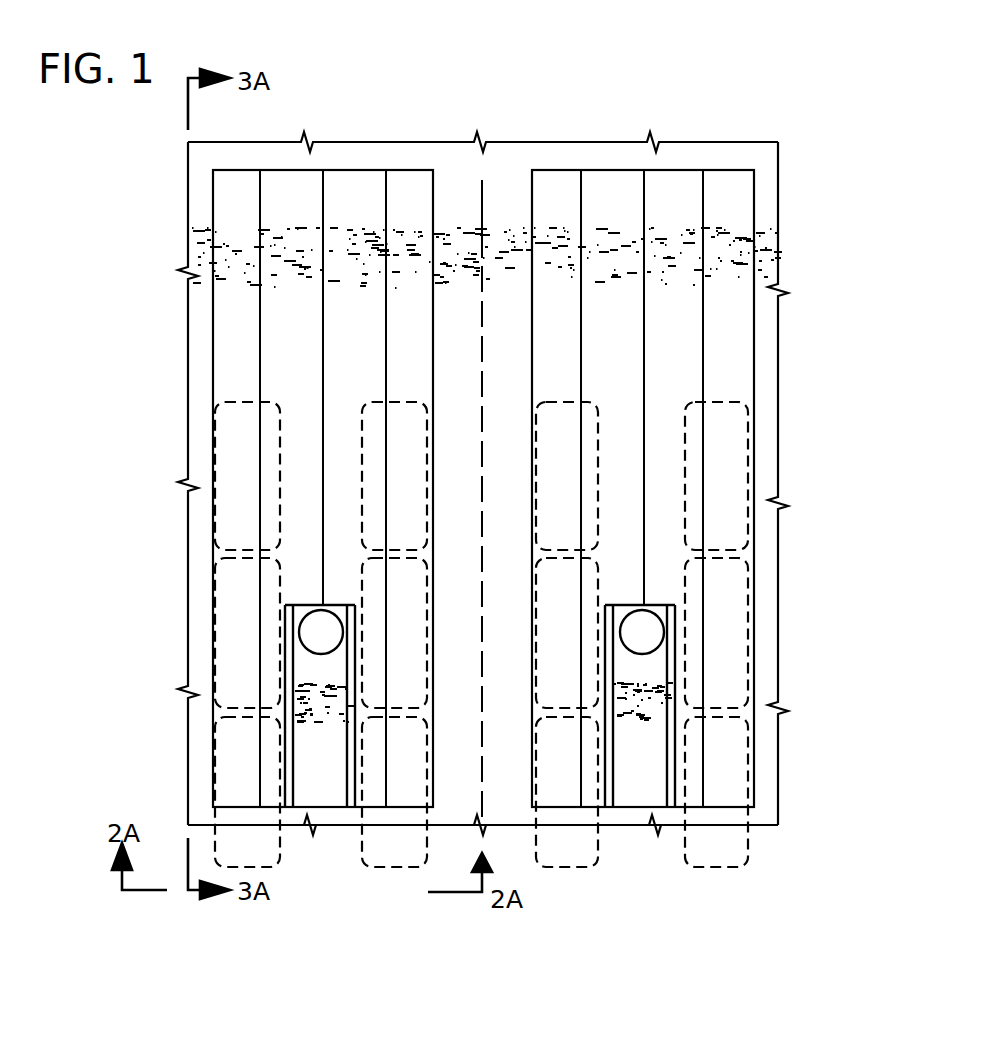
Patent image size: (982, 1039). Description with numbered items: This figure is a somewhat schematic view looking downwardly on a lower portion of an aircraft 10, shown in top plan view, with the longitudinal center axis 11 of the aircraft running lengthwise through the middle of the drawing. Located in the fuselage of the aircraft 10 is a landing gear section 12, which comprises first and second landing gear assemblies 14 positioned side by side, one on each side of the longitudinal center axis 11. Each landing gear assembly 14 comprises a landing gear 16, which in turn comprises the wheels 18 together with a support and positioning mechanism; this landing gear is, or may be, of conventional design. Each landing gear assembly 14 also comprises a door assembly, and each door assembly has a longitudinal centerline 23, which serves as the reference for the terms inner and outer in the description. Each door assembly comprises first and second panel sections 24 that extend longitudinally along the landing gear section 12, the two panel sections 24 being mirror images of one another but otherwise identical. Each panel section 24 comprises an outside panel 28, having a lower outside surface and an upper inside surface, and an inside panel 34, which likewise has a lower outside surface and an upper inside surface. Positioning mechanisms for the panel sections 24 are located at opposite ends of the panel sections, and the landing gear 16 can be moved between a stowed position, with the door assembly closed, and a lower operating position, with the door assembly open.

The aircraft 10 is at (793, 273).
The longitudinal center axis 11 is at (481, 180).
The landing gear section 12 is at (779, 383).
The landing gear assembly 14 is at (212, 543).
The landing gear 16 is at (230, 635).
The wheels 18 is at (597, 858).
The longitudinal centerline 23 is at (323, 368).
The panel section 24 is at (237, 218).
The outside panel 28 is at (560, 188).
The inside panel 34 is at (603, 188).